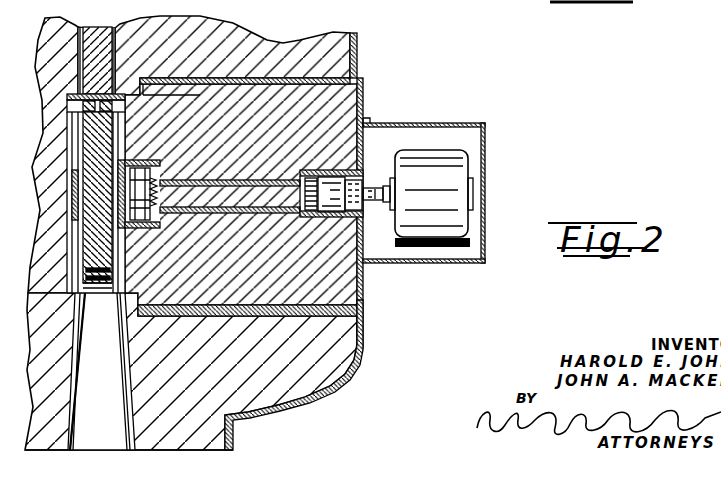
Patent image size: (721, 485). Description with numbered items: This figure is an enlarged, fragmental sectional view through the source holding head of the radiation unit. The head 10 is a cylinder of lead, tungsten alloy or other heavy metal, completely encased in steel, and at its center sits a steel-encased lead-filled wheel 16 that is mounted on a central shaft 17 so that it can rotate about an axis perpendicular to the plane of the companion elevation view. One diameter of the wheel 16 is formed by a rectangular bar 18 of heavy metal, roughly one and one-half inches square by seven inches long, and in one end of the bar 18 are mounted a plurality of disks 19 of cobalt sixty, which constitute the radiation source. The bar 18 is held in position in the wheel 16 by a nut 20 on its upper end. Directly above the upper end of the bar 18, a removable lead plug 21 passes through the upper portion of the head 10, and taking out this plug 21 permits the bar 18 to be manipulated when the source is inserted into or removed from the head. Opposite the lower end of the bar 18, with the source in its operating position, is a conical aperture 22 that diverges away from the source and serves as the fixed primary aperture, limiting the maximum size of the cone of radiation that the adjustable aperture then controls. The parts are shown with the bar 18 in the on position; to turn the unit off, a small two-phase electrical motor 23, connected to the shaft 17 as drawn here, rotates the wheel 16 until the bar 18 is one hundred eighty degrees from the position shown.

The head 10 is at (222, 26).
The wheel 16 is at (244, 241).
The central shaft 17 is at (200, 187).
The rectangular bar 18 is at (100, 144).
The disks 19 is at (107, 278).
The nut 20 is at (117, 112).
The lead plug 21 is at (97, 38).
The conical aperture 22 is at (125, 386).
The two phase electrical motor 23 is at (455, 172).